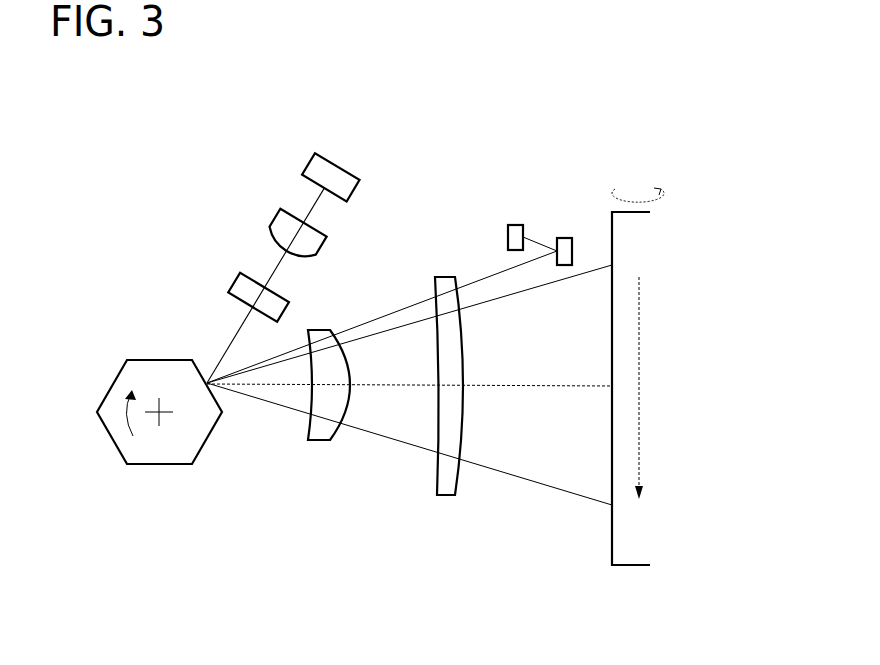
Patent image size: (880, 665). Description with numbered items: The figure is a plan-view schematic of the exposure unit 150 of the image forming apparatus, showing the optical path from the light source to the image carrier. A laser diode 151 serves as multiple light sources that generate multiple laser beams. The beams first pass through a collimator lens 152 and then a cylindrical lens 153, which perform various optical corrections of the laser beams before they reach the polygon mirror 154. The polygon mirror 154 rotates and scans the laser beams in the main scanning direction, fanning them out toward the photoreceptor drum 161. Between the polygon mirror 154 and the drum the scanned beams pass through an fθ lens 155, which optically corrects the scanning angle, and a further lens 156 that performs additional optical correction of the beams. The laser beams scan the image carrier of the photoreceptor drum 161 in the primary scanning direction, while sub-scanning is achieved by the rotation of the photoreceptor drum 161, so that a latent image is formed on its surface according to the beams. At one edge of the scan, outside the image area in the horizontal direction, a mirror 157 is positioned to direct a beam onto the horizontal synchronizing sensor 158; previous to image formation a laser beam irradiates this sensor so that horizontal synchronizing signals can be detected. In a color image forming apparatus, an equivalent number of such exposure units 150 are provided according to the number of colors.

The exposure unit 150 is at (272, 74).
The laser diode 151 is at (302, 151).
The collimator lens 152 is at (282, 222).
The cylindrical lens 153 is at (237, 276).
The polygon mirror 154 is at (143, 356).
The fθ lens 155 is at (315, 441).
The lens 156 is at (444, 497).
The mirror 157 is at (557, 240).
The horizontal synchronizing sensor 158 is at (508, 239).
The photoreceptor drum 161 is at (628, 566).